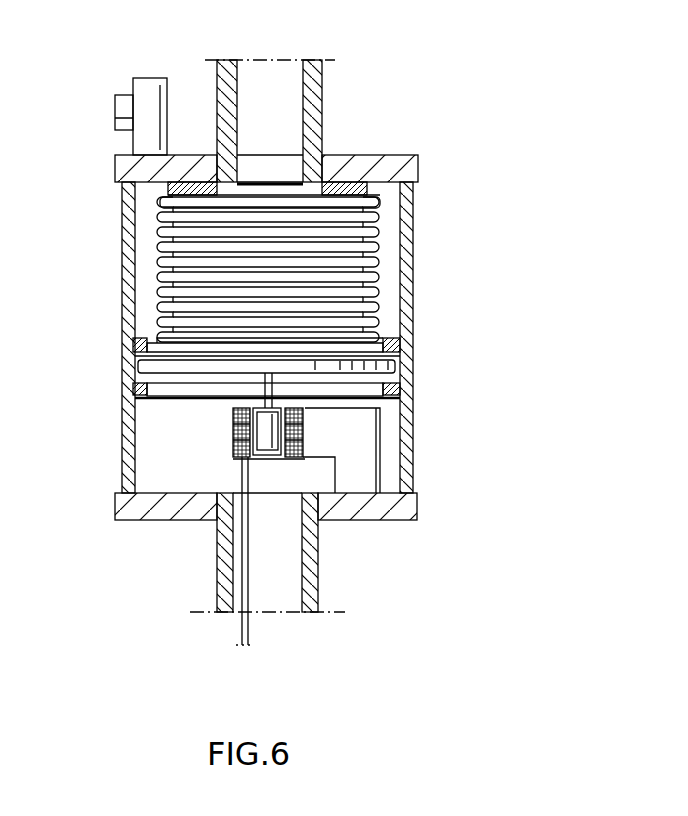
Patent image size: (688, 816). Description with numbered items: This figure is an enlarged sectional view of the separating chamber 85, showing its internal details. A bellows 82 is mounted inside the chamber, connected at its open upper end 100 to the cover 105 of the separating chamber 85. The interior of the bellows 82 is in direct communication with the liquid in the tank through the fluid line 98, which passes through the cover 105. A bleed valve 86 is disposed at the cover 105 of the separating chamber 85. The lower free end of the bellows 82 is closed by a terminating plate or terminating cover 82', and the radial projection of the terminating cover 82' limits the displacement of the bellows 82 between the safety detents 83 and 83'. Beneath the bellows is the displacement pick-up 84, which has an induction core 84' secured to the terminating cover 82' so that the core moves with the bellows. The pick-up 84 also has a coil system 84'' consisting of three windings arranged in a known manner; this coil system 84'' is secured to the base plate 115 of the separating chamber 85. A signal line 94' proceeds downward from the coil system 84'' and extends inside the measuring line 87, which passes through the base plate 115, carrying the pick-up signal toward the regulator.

The fluid line 98 is at (300, 103).
The bleed valve 86 is at (115, 100).
The cover 105 is at (393, 168).
The open upper end 100 is at (368, 190).
The separating chamber 85 is at (410, 252).
The bellows 82 is at (306, 269).
The safety detent 83 is at (299, 354).
The terminating cover 82' is at (109, 355).
The safety detent 83' is at (302, 386).
The displacement pick-up 84 is at (322, 432).
The induction core 84' is at (230, 414).
The coil system 84'' is at (206, 444).
The base plate 115 is at (368, 516).
The measuring line 87 is at (290, 592).
The lead wire 94' is at (217, 555).